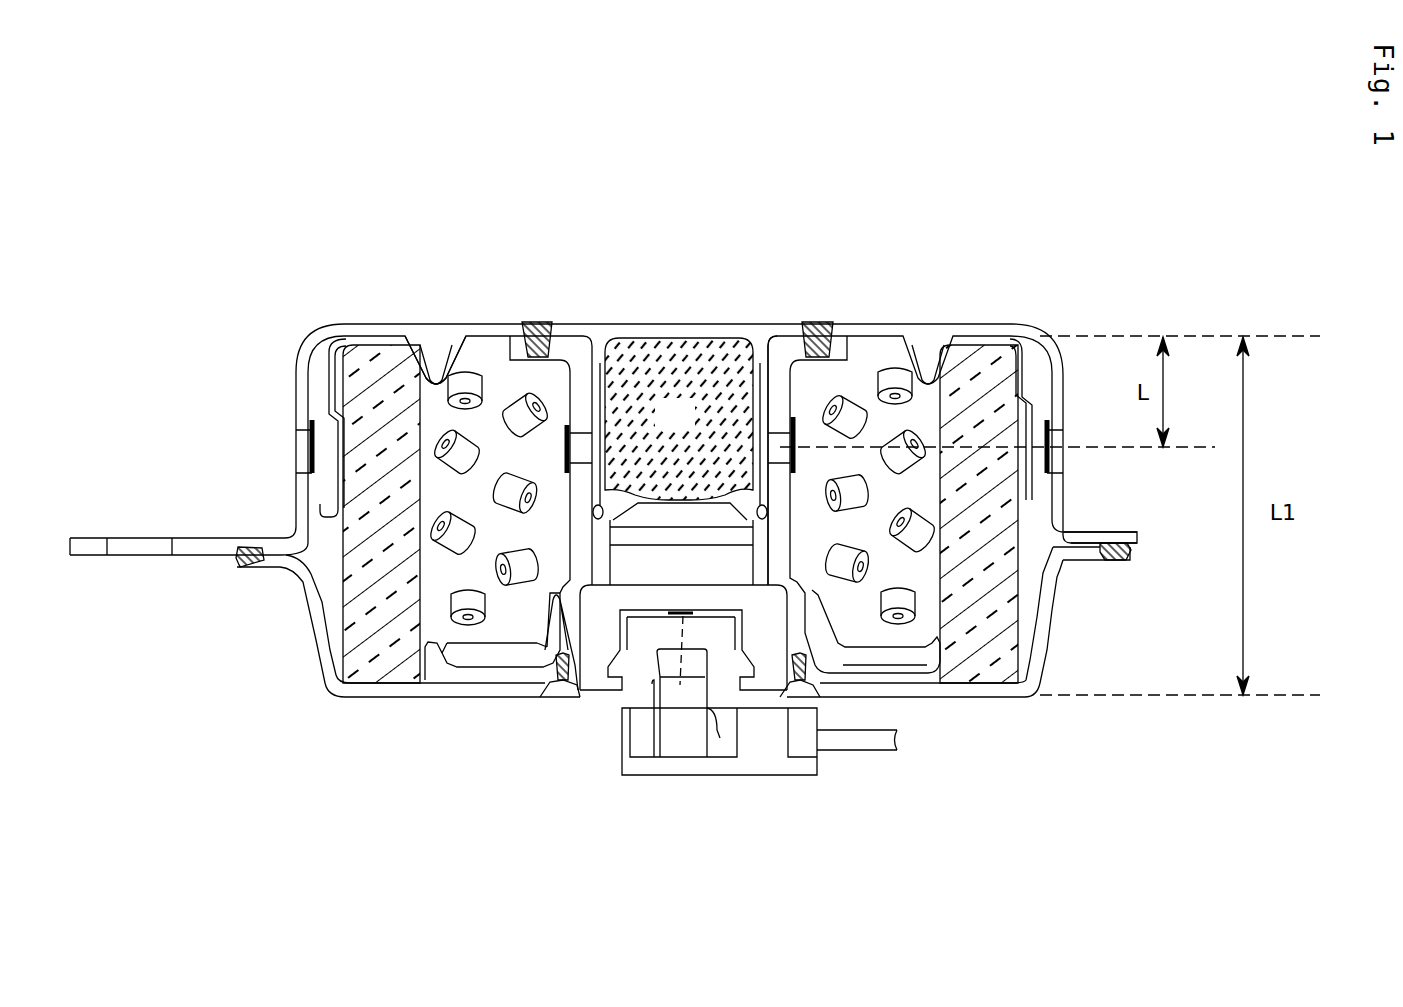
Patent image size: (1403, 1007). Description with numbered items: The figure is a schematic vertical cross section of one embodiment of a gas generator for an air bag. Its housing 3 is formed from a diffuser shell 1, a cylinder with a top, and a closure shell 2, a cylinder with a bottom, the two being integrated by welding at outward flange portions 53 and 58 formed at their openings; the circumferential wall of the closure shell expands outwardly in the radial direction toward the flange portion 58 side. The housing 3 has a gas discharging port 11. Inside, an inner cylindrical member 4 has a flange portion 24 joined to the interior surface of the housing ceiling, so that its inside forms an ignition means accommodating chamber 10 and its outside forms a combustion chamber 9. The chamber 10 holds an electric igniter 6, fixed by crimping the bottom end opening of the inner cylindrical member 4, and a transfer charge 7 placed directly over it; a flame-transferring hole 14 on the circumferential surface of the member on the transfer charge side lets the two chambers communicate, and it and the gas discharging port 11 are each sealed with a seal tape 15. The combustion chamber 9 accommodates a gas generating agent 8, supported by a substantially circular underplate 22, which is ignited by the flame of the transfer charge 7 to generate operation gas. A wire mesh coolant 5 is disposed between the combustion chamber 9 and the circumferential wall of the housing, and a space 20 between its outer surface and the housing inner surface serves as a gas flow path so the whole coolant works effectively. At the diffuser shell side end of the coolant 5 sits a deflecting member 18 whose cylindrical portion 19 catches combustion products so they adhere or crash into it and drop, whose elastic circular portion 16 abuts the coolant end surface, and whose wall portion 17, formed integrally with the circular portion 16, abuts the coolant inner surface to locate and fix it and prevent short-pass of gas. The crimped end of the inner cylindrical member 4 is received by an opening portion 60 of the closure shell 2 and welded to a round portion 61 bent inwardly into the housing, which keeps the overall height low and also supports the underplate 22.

The diffuser shell 1 is at (1060, 497).
The closure shell 2 is at (1060, 577).
The housing 3 is at (1157, 483).
The inner cylindrical member 4 is at (780, 513).
The coolant 5 is at (993, 360).
The igniter 6 is at (673, 573).
The transfer charge 7 is at (665, 424).
The gas generating agent 8 is at (463, 373).
The combustion chamber 9 is at (488, 368).
The ignition means accommodating chamber 10 is at (632, 360).
The gas discharging port 11 is at (302, 450).
The flame-transferring hole 14 is at (793, 437).
The seal tape 15 is at (567, 443).
The circular portion 16 is at (358, 345).
The wall portion 17 is at (433, 347).
The deflecting member 18 is at (262, 207).
The cylindrical portion 19 is at (310, 420).
The space 20 is at (337, 575).
The underplate 22 is at (463, 657).
The flange portion 24 is at (778, 350).
The outward flange portion 53 is at (282, 538).
The outward flange portion 58 is at (277, 568).
The opening portion 60 is at (565, 693).
The round portion 61 is at (553, 667).